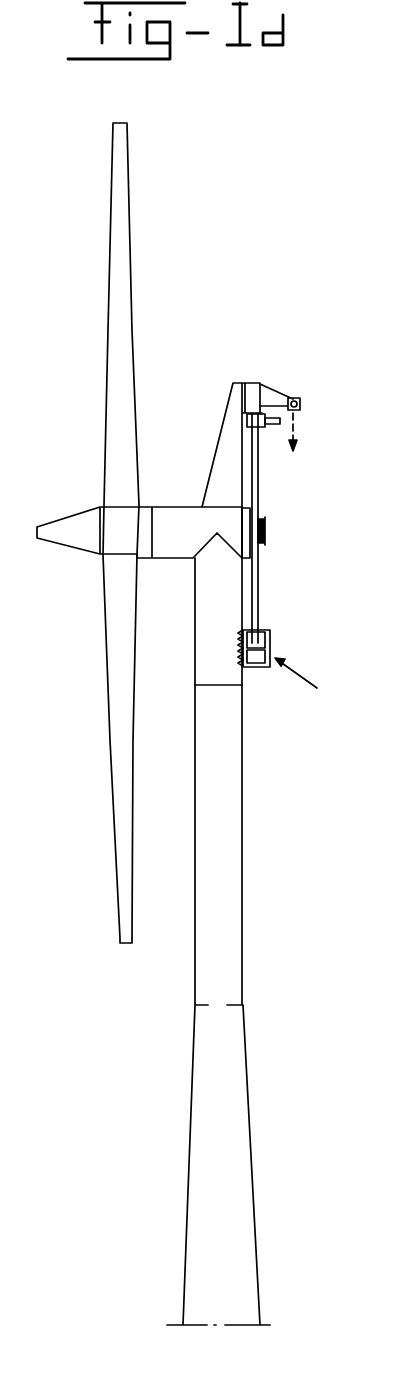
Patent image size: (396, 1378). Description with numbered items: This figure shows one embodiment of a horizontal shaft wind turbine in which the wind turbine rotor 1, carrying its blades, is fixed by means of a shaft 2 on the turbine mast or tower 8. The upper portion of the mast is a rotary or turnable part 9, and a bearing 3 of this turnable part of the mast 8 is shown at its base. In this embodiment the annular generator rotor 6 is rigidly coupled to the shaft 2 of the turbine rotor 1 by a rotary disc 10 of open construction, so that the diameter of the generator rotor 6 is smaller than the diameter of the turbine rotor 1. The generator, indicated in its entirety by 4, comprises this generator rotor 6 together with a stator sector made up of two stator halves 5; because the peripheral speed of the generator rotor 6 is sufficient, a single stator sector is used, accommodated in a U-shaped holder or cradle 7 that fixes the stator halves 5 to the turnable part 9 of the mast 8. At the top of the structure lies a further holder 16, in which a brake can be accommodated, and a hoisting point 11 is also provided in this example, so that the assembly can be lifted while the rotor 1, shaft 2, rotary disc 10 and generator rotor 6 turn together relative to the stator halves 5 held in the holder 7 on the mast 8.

The wind turbine rotor 1 is at (120, 243).
The shaft 2 is at (262, 533).
The bearing 3 is at (208, 688).
The generator 4 is at (304, 682).
The stator halves 5 is at (245, 643).
The generator rotor 6 is at (268, 633).
The U-shaped holder 7 is at (263, 665).
The mast 8 is at (232, 860).
The turnable part 9 is at (212, 590).
The rotary disc 10 is at (258, 578).
The hoisting point 11 is at (302, 409).
The holder 16 is at (250, 418).